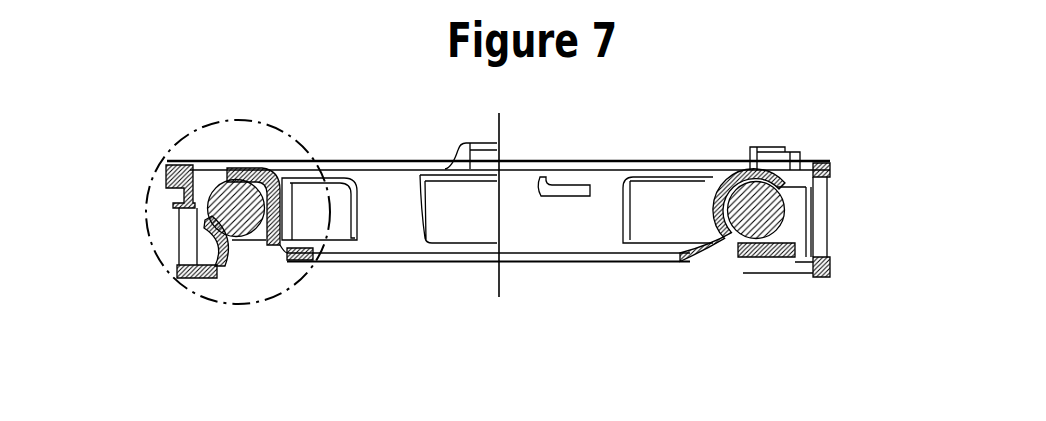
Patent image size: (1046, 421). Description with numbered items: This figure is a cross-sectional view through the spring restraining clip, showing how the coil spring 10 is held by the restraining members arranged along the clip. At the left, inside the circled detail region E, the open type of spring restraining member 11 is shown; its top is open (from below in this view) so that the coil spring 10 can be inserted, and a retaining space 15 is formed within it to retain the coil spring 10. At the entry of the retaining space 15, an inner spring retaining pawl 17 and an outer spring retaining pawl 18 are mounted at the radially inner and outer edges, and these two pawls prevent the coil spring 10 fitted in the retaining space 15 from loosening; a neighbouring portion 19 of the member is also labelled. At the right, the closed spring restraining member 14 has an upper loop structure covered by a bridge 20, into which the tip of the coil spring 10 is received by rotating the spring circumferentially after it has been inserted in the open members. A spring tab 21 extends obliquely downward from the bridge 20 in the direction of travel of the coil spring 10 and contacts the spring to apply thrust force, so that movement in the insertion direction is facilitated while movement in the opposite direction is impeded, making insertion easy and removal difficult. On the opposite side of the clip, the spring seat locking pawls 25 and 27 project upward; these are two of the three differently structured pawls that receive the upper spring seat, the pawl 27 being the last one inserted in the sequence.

The enlarged detail region E is at (173, 141).
The coil spring 10 is at (252, 198).
The open type of spring restraining member 11 is at (170, 293).
The closed spring restraining member 14 is at (799, 218).
The retaining space 15 is at (243, 247).
The inner spring retaining pawl 17 is at (264, 248).
The outer spring retaining pawl 18 is at (215, 278).
The ball retainer 19 is at (293, 282).
The bridge 20 is at (721, 275).
The spring tab 21 is at (765, 257).
The spring seat locking pawl 25 is at (480, 142).
The spring seat locking pawl 27 is at (780, 147).